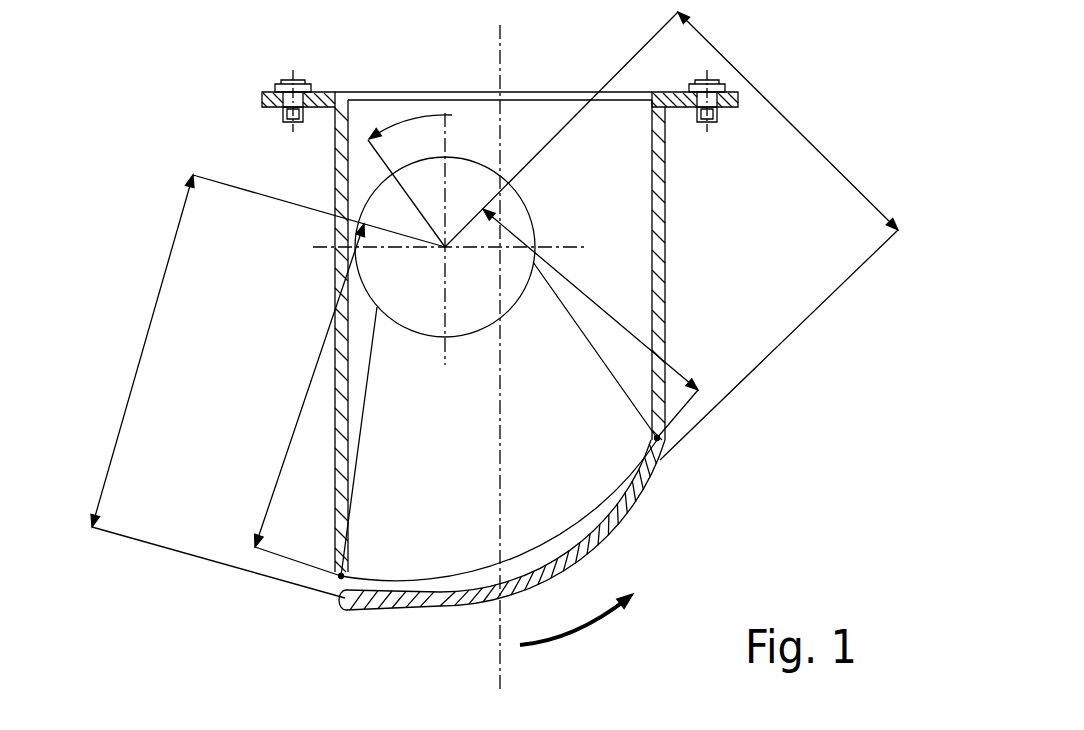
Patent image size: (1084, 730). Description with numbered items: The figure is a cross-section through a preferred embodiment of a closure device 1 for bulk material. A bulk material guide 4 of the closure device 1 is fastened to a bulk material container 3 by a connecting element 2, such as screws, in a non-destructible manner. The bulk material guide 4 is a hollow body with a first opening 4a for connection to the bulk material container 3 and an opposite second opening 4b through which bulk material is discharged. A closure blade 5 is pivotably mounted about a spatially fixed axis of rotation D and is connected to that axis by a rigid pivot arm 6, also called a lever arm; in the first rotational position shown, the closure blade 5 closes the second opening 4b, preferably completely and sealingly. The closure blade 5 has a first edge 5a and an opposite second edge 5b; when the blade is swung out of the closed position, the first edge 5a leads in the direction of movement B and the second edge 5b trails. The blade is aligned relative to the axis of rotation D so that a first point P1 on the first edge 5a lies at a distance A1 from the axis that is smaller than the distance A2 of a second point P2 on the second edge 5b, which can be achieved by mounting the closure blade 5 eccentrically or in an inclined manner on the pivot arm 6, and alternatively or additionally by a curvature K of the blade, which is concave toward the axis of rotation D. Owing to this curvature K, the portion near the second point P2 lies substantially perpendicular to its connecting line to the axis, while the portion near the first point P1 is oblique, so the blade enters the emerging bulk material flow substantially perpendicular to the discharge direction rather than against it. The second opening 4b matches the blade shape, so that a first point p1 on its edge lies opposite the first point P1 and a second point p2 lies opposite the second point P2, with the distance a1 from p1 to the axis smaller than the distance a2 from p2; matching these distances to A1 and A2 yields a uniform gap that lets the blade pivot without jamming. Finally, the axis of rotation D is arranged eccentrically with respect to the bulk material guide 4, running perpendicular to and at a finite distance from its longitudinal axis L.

The closure device 1 is at (100, 103).
The connecting element 2 is at (284, 110).
The bulk material container 3 is at (271, 92).
The bulk material guide 4 is at (666, 184).
The first opening 4a is at (431, 92).
The second opening 4b is at (441, 592).
The closure blade 5 is at (647, 508).
The first edge 5a is at (659, 462).
The second edge 5b is at (345, 600).
The pivot arm 6 is at (373, 343).
The distance A1 is at (800, 125).
The distance A2 is at (150, 323).
The distance a1 is at (625, 318).
The distance a2 is at (301, 410).
The direction of movement B is at (593, 627).
The axis of rotation D is at (445, 247).
The curvature K is at (567, 543).
The longitudinal axis L is at (502, 33).
The first point P1 is at (662, 461).
The second point P2 is at (344, 600).
The first point p1 is at (655, 438).
The second point p2 is at (343, 576).